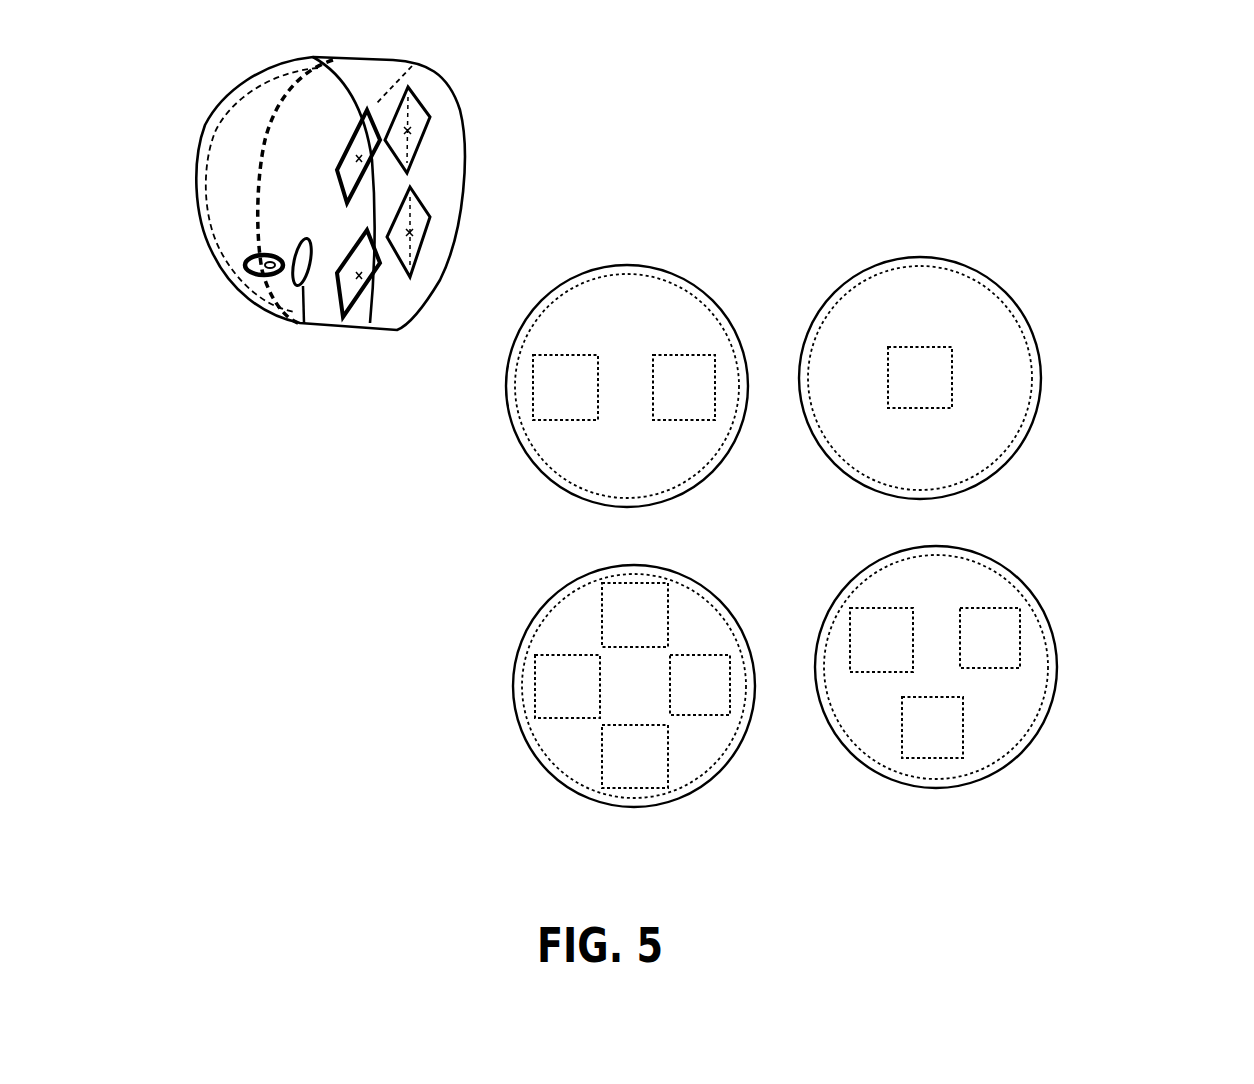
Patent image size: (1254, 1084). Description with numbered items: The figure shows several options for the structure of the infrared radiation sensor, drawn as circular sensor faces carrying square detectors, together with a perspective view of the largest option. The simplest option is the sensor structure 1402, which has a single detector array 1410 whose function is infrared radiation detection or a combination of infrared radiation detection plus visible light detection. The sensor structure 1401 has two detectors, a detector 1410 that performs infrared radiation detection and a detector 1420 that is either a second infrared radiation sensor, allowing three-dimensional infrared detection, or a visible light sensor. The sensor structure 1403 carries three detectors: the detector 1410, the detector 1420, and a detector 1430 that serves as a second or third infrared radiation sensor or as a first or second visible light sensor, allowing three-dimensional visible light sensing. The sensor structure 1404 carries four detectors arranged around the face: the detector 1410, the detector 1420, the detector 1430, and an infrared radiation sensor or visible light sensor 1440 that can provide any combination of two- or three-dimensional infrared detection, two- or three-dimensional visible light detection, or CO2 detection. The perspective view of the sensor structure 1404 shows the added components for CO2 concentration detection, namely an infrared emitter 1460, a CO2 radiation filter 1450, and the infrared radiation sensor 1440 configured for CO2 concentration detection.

The infrared radiation sensor structure with two detectors 1401 is at (677, 272).
The infrared radiation sensor structure with one detector array 1402 is at (960, 268).
The infrared radiation sensor structure with three detectors 1403 is at (1055, 655).
The infrared radiation sensor structure with four detectors 1404 is at (470, 150).
The detector 1410 is at (552, 417).
The detector 1420 is at (663, 417).
The detector 1430 is at (533, 690).
The infrared radiation sensor or visible light sensor 1440 is at (623, 787).
The CO2 radiation filter 1450 is at (305, 323).
The infrared emitter 1460 is at (255, 303).